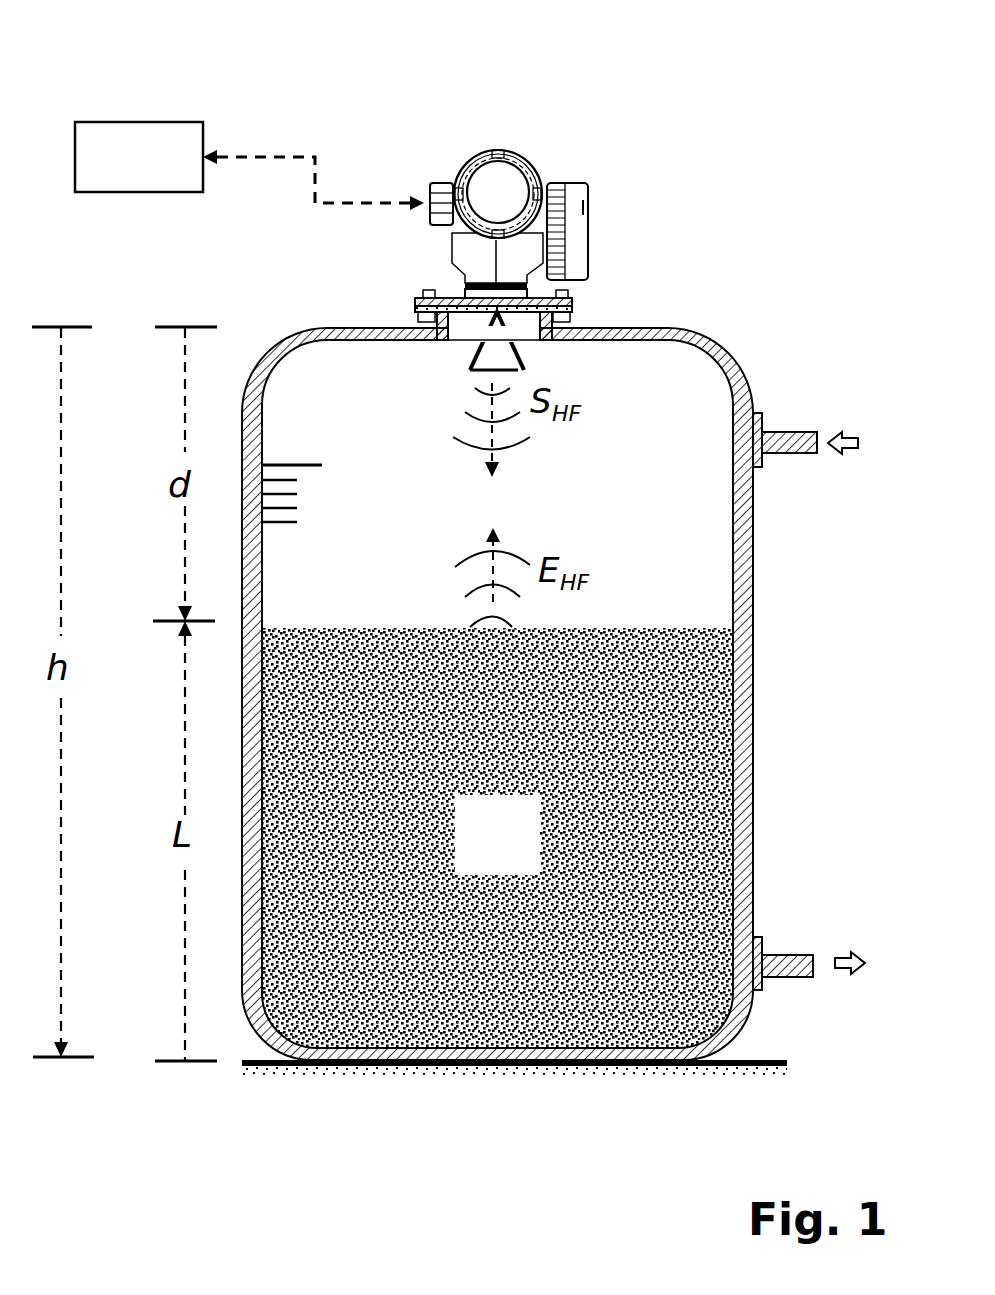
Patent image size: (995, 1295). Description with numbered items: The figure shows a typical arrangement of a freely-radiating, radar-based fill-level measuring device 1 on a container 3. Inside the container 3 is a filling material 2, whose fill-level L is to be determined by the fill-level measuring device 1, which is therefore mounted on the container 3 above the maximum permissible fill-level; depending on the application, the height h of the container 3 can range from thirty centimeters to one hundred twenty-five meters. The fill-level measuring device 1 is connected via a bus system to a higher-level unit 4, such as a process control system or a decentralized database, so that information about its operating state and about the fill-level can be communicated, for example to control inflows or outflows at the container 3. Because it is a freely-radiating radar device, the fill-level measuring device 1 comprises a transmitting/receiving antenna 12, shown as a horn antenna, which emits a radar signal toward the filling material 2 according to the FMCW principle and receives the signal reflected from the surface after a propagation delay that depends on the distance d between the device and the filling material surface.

The fill-level measuring device 1 is at (372, 120).
The filling material 2 is at (498, 858).
The container 3 is at (753, 766).
The higher-level unit 4 is at (152, 180).
The transmitting/receiving antenna 12 is at (470, 362).